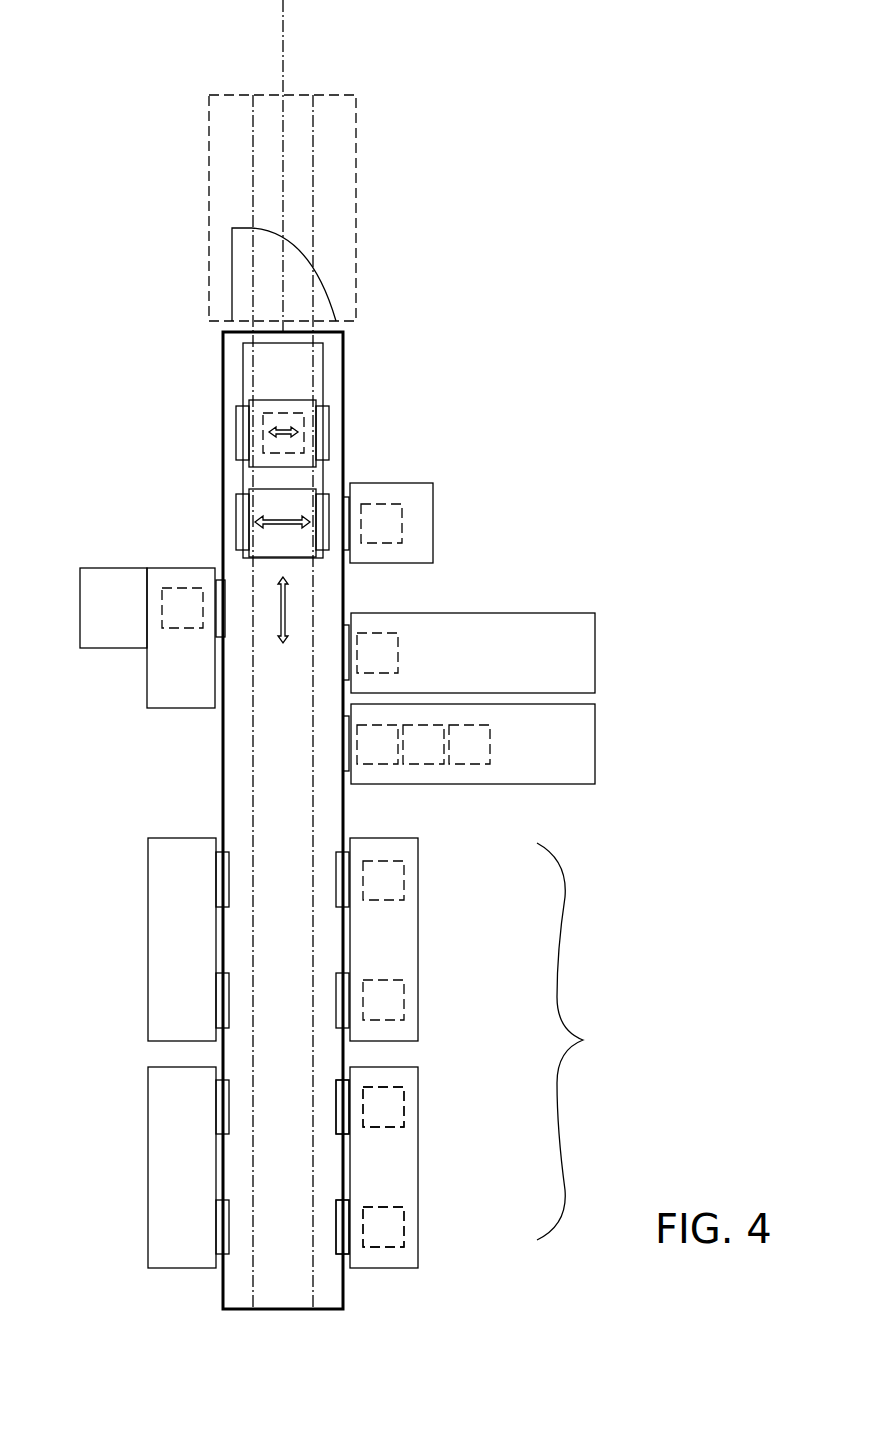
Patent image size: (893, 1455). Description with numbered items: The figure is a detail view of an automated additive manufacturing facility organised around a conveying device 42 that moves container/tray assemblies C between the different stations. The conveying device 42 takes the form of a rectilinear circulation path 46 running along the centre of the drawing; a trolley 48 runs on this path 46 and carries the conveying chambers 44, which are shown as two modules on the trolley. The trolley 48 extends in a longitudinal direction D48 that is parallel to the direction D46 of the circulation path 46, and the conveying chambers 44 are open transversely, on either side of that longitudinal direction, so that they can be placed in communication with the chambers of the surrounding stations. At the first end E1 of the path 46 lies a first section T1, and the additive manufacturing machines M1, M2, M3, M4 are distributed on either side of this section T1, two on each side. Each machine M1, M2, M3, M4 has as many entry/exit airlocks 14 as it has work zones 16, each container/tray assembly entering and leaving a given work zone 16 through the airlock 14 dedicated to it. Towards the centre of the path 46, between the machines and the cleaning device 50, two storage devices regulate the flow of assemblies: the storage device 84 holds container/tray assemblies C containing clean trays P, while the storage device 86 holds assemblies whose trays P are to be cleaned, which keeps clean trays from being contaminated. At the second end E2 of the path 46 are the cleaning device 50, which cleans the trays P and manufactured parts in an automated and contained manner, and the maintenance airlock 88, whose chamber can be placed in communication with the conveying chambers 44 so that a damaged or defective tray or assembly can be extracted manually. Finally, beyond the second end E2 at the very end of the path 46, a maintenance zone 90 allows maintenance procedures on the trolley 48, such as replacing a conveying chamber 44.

The conveying device 42 is at (212, 756).
The circulation path 46 is at (253, 790).
The longitudinal direction of the trolley D48 is at (283, 26).
The direction of the circulation path D46 is at (365, 166).
The maintenance zone 90 is at (356, 154).
The second end E2 is at (212, 337).
The trolley 48 is at (250, 369).
The conveying chamber 44 is at (293, 398).
The maintenance airlock 88 is at (433, 521).
The cleaning device 50 is at (103, 556).
The storage device for trays to be cleaned 86 is at (595, 650).
The storage device for clean trays 84 is at (595, 745).
The tray P is at (358, 824).
The container/tray assembly C is at (304, 432).
The additive manufacturing machine M1 is at (155, 943).
The additive manufacturing machine M2 is at (155, 1157).
The additive manufacturing machine M3 is at (405, 1173).
The additive manufacturing machine M4 is at (405, 942).
The work zone 16 is at (403, 1108).
The entry/exit airlock 14 is at (337, 1233).
The first end E1 is at (335, 1322).
The first section T1 is at (580, 1041).